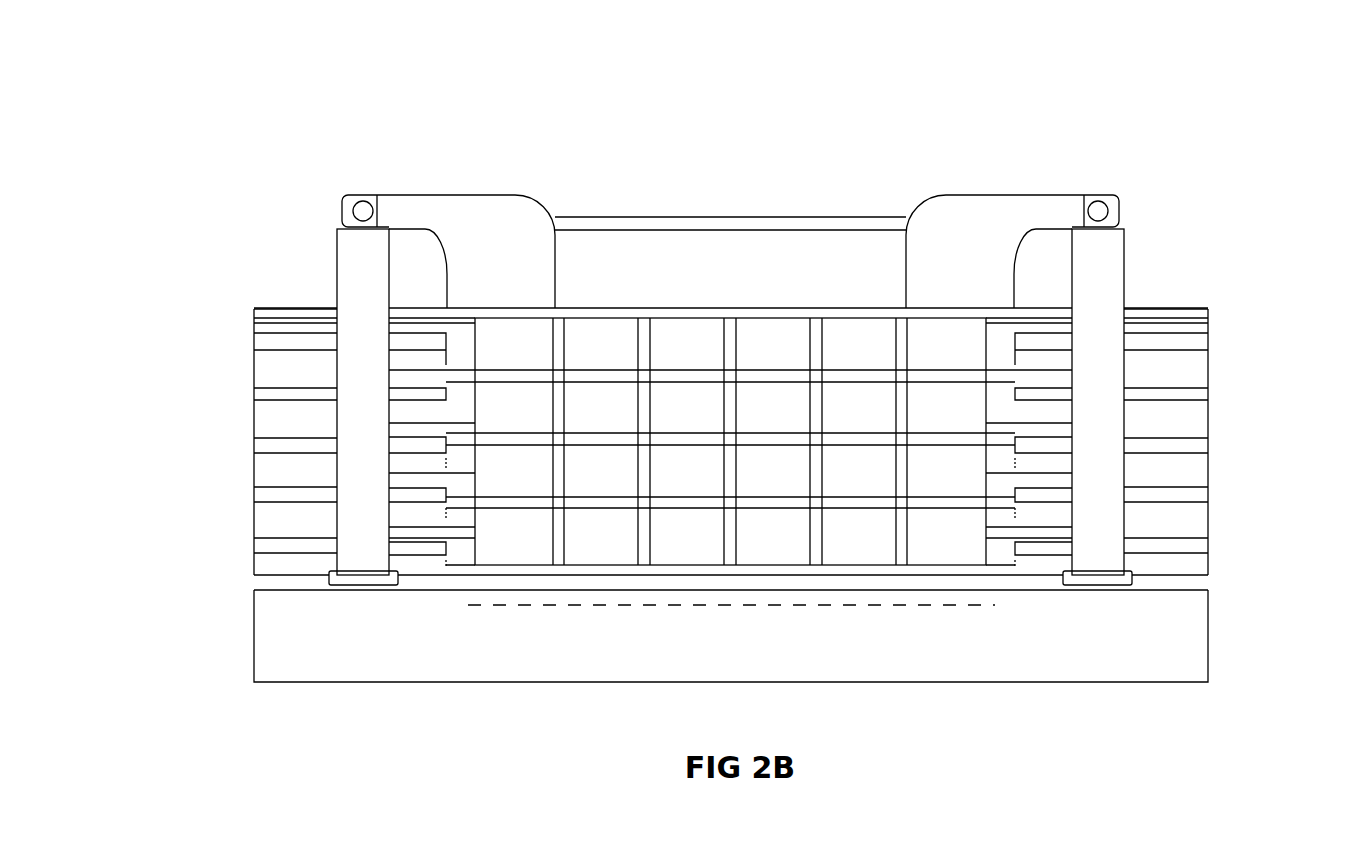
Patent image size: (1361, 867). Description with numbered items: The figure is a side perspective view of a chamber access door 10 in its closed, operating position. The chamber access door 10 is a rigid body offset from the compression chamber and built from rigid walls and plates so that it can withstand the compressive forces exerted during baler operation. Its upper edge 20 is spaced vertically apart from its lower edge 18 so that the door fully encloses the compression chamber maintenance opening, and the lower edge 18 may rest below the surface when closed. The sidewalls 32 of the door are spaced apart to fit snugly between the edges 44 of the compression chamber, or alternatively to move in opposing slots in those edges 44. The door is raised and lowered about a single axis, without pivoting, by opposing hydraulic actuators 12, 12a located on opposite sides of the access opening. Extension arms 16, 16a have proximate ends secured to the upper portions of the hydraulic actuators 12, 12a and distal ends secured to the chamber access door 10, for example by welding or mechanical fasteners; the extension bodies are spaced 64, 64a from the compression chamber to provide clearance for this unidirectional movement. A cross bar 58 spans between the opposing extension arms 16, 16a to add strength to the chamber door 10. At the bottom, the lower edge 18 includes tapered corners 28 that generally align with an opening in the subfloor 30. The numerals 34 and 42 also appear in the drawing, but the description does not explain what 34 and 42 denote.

The chamber access door 10 is at (724, 394).
The hydraulic actuator 12 is at (1093, 447).
The hydraulic actuator 12a is at (368, 447).
The extension arm 16 is at (962, 195).
The extension arm 16a is at (512, 195).
The lower edge 18 is at (895, 605).
The upper edge 20 is at (735, 305).
The tapered corners 28 is at (1040, 590).
The subfloor 30 is at (778, 590).
The sidewall 32 is at (446, 337).
The bottom layer 34 is at (674, 570).
The laminated stack 42 is at (1156, 310).
The compression chamber edge 44 is at (475, 392).
The cross bar 58 is at (700, 215).
The spacing 64 is at (1052, 258).
The spacing 64a is at (418, 257).